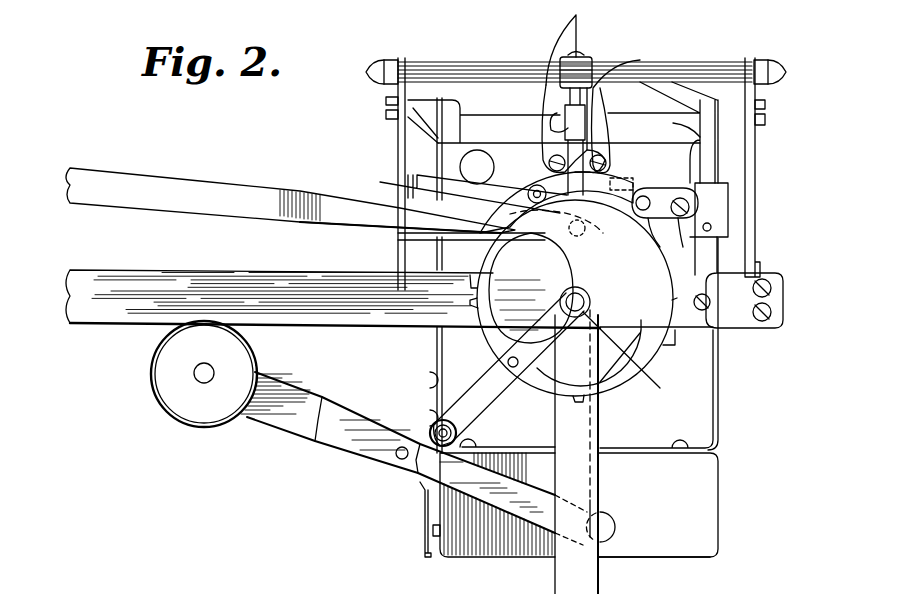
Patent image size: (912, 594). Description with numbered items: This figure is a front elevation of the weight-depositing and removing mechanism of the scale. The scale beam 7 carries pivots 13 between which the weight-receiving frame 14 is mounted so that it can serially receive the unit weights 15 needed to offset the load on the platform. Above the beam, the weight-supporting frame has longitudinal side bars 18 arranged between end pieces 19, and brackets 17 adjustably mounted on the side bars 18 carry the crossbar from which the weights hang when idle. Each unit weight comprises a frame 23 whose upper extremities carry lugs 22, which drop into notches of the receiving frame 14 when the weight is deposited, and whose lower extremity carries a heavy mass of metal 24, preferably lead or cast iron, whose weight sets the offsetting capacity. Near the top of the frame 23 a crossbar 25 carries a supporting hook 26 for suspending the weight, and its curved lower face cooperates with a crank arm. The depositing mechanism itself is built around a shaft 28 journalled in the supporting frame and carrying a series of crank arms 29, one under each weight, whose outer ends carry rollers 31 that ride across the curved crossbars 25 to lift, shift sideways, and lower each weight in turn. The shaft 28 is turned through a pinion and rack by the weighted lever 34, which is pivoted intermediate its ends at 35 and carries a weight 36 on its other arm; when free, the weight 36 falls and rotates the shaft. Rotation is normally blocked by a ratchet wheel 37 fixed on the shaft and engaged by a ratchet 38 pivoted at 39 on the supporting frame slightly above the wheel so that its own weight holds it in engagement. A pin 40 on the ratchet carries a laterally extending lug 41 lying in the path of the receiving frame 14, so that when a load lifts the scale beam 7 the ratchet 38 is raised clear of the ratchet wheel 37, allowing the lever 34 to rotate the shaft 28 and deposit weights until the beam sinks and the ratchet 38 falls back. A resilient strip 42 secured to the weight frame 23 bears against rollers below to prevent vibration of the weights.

The scale beam 7 is at (279, 192).
The pivots 13 is at (560, 253).
The weight-receiving frame 14 is at (440, 186).
The weights 15 is at (718, 505).
The brackets 17 is at (584, 68).
The longitudinal side bars 18 is at (462, 68).
The end pieces 19 is at (398, 120).
The lugs 22 is at (386, 114).
The frame 23 is at (723, 388).
The heavy masses of metal 24 is at (683, 558).
The crossbar 25 is at (491, 167).
The supporting hook 26 is at (548, 100).
The shaft 28 is at (637, 365).
The crank arms 29 is at (583, 309).
The rollers 31 is at (510, 225).
The weighted lever 34 is at (358, 465).
The pivot 35 is at (402, 460).
The weight 36 is at (200, 426).
The ratchet wheel 37 is at (655, 345).
The ratchet 38 is at (660, 195).
The ratchet pivot 39 is at (679, 247).
The pin 40 is at (603, 155).
The lug 41 is at (594, 130).
The resilient strips 42 is at (425, 552).